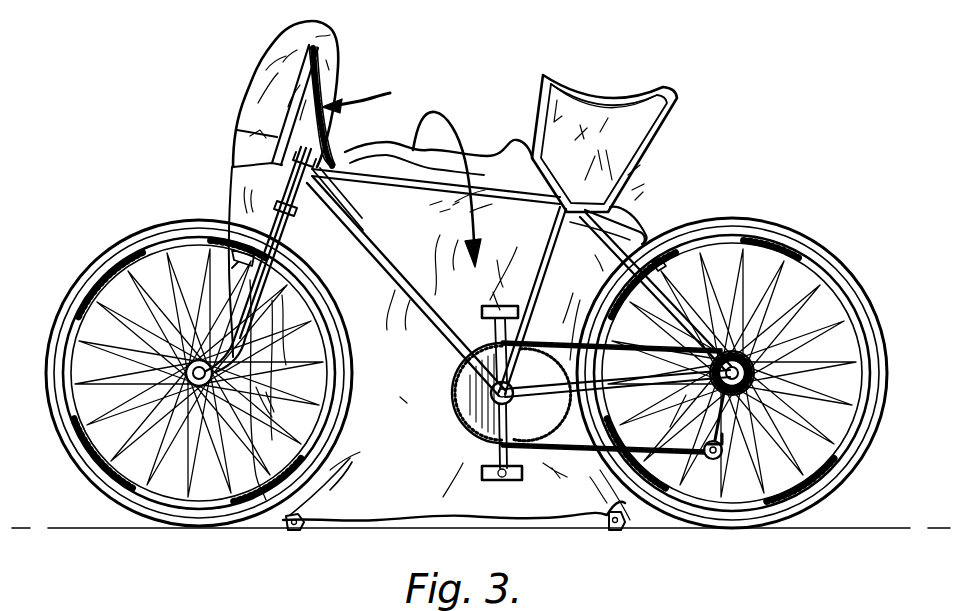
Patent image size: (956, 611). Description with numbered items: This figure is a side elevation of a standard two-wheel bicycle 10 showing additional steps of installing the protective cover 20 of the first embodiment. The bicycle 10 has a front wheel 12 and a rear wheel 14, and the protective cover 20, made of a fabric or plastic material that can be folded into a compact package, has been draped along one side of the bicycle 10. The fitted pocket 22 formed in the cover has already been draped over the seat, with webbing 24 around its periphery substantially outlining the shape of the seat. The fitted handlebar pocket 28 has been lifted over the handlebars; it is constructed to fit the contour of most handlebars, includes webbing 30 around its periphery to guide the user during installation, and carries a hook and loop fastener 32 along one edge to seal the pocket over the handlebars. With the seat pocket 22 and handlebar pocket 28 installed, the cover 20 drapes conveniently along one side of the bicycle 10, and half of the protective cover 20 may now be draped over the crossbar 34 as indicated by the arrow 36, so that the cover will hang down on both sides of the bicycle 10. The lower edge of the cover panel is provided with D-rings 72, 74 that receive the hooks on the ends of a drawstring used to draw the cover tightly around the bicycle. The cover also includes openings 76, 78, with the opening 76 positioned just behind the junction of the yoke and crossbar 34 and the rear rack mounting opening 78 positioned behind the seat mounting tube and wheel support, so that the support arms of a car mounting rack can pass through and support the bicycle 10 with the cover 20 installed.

The bicycle 10 is at (154, 215).
The front wheel 12 is at (102, 250).
The rear wheel 14 is at (773, 227).
The protective cover 20 is at (382, 452).
The fitted pocket 22 is at (683, 110).
The webbing 24 is at (647, 161).
The fitted handlebar pocket 28 is at (283, 47).
The webbing 30 is at (277, 137).
The hook and loop fastener 32 is at (330, 90).
The crossbar 34 is at (490, 200).
The arrow 36 is at (440, 110).
The D-ring 72 is at (613, 523).
The D-ring 74 is at (292, 528).
The opening 76 is at (363, 230).
The rear rack mounting opening 78 is at (597, 237).